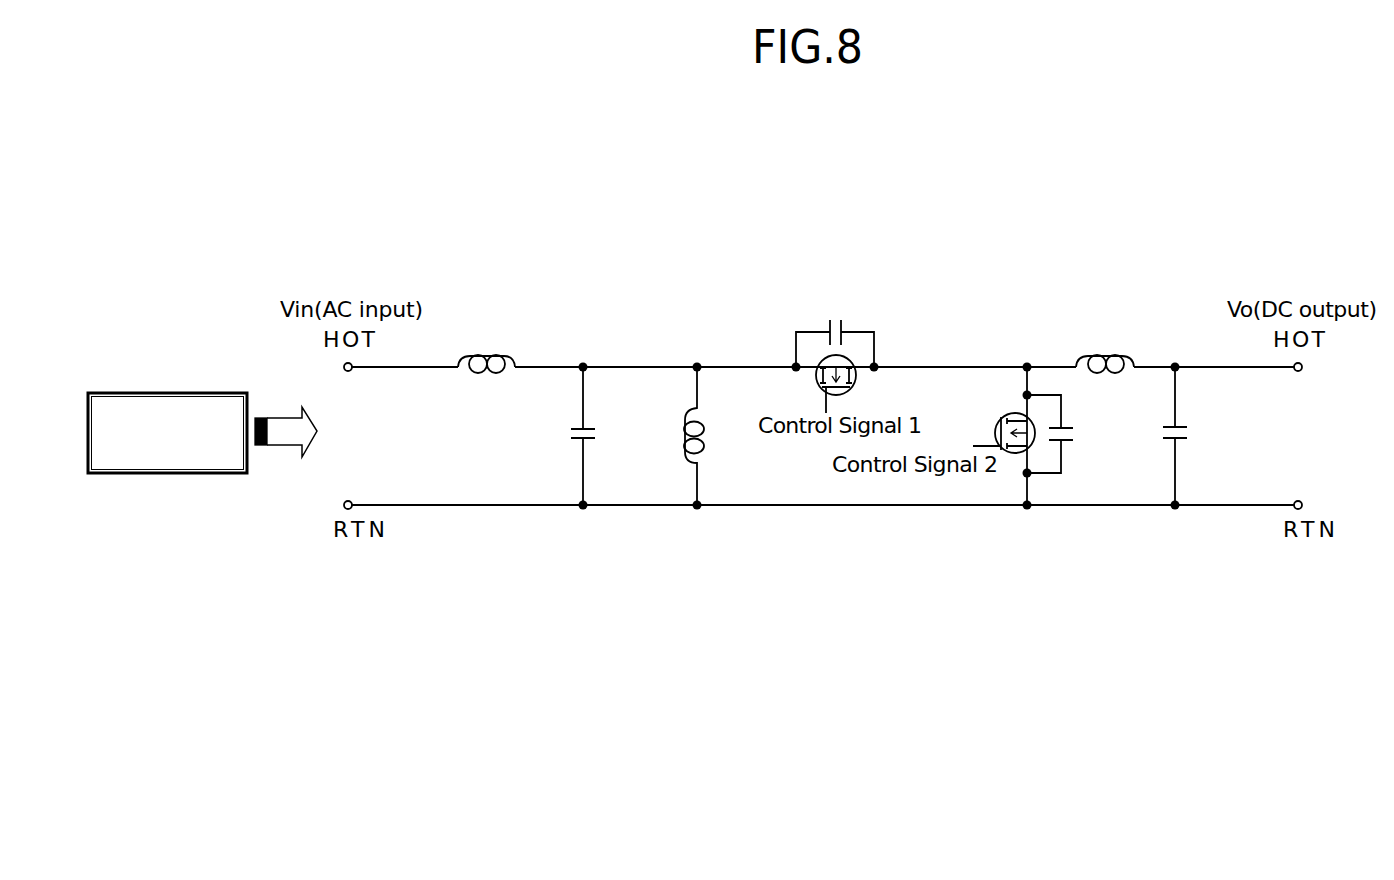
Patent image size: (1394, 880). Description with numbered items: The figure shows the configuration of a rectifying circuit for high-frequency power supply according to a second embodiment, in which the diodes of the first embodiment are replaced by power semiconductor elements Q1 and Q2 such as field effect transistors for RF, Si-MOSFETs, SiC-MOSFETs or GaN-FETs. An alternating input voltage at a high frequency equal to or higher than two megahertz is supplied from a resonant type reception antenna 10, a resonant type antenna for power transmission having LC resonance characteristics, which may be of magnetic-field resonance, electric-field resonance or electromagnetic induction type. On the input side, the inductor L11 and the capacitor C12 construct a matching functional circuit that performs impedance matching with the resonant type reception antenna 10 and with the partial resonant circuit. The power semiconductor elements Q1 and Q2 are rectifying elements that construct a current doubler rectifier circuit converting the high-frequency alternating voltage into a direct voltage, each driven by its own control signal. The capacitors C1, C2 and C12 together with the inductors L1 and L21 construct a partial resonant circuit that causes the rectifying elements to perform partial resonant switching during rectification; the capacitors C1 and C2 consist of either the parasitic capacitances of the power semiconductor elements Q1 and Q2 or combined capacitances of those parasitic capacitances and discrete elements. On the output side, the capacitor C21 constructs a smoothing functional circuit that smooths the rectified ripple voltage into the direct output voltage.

The resonant type reception antenna 10 is at (167, 394).
The inductor L11 is at (486, 350).
The capacitor C12 is at (605, 436).
The inductor L1 is at (714, 436).
The capacitor C1 is at (835, 329).
The power semiconductor element Q1 is at (851, 384).
The power semiconductor element Q2 is at (1001, 421).
The capacitor C2 is at (1067, 434).
The inductor L21 is at (1105, 350).
The capacitor C21 is at (1198, 436).